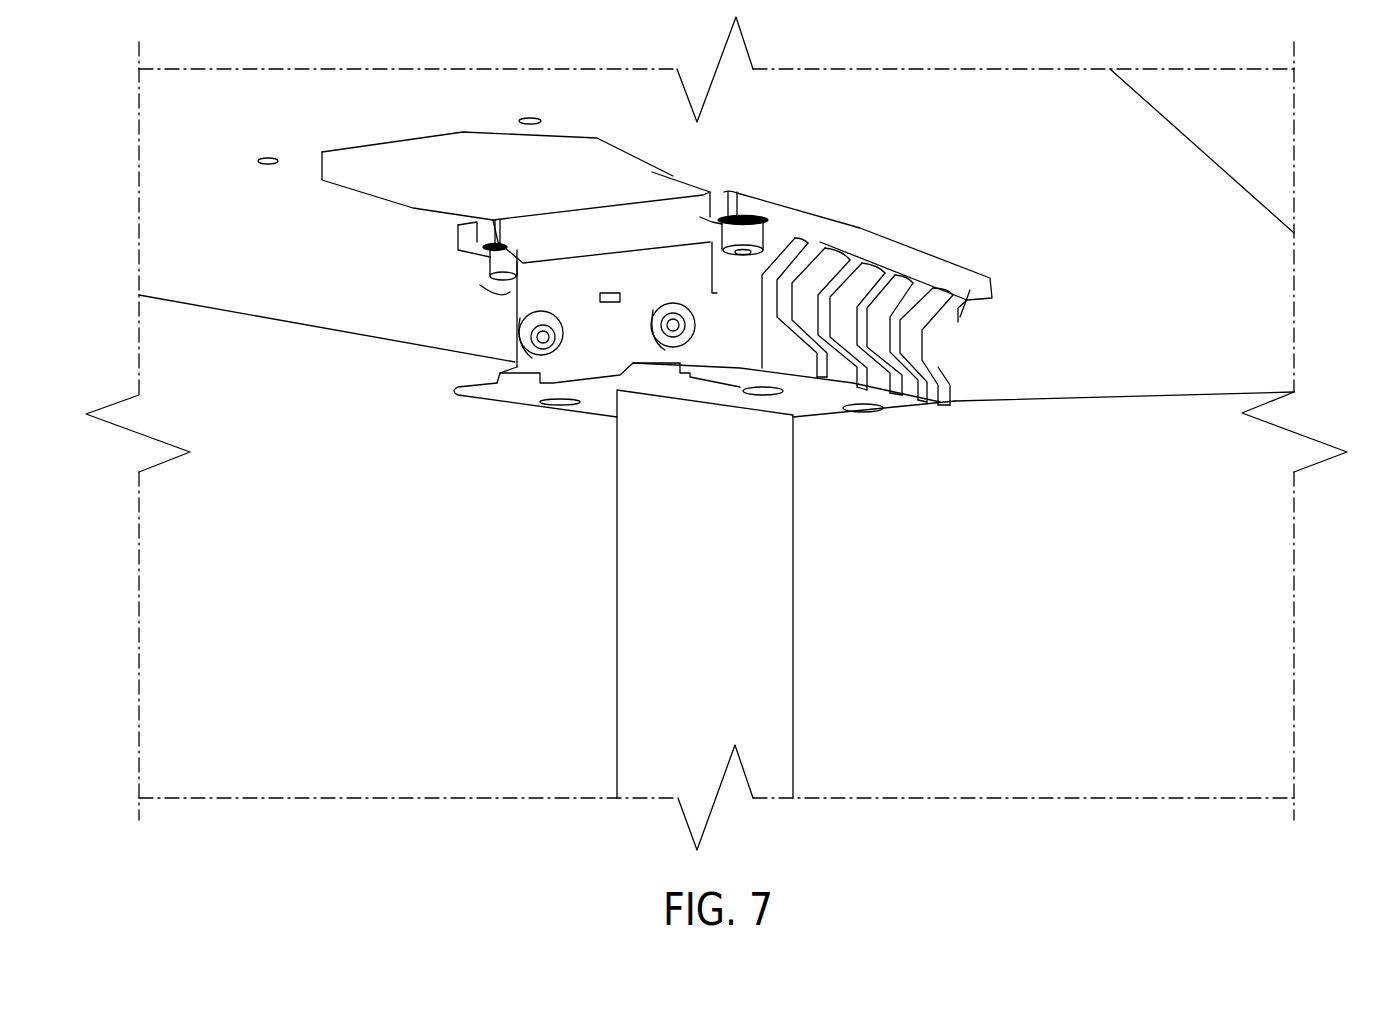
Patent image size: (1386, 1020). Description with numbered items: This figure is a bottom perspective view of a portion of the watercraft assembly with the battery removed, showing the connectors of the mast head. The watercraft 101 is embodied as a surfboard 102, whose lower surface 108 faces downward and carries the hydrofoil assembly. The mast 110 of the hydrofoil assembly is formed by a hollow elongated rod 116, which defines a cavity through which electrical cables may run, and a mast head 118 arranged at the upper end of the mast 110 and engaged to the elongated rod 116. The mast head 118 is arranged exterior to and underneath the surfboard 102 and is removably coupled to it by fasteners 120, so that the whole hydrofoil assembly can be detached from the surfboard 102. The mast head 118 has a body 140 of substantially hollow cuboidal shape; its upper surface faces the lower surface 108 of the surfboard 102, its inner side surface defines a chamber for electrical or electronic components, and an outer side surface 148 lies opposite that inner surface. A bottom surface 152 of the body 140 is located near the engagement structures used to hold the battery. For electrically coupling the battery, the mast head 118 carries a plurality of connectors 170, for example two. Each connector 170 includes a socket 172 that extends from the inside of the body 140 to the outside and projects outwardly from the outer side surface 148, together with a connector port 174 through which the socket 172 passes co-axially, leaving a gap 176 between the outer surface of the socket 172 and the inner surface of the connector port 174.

The watercraft 101 is at (1262, 238).
The surfboard 102 is at (1262, 272).
The lower surface 108 is at (1108, 220).
The mast 110 is at (768, 628).
The elongated rod 116 is at (637, 543).
The mast head 118 is at (902, 334).
The fasteners 120 is at (458, 232).
The body 140 is at (968, 318).
The outer side surface 148 is at (507, 295).
The bottom surface 152 is at (825, 398).
The connectors 170 is at (512, 345).
The socket 172 is at (520, 348).
The connector port 174 is at (545, 305).
The gap 176 is at (536, 359).